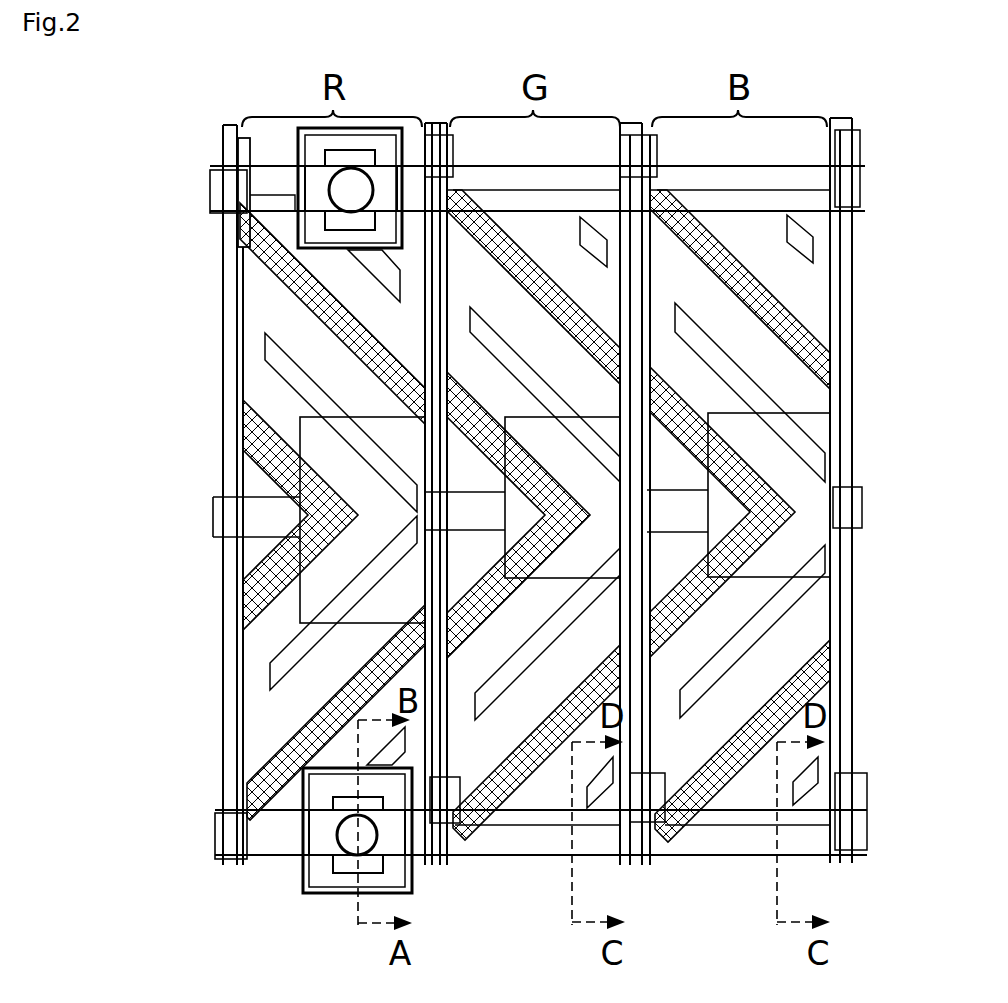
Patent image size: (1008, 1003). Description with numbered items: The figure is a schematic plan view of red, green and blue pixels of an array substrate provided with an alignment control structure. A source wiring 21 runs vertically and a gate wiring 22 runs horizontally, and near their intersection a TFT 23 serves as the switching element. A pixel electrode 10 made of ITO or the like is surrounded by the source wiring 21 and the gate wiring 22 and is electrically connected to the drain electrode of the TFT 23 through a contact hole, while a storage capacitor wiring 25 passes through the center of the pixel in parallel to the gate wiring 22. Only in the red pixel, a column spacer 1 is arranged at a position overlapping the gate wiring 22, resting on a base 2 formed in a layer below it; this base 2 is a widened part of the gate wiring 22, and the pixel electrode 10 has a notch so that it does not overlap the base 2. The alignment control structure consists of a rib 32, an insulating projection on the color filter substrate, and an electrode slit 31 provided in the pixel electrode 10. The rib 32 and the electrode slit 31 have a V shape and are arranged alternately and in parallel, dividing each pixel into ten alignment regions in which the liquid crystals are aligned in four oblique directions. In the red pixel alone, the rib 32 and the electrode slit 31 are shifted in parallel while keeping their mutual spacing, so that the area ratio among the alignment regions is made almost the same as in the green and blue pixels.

The column spacer 1 is at (347, 843).
The base 2 is at (313, 888).
The pixel electrode 10 is at (270, 315).
The source wiring 21 is at (228, 129).
The gate wiring 22 is at (263, 182).
The TFT 23 is at (243, 152).
The storage capacitor wiring 25 is at (300, 620).
The electrode slit 31 is at (272, 353).
The rib 32 is at (237, 246).